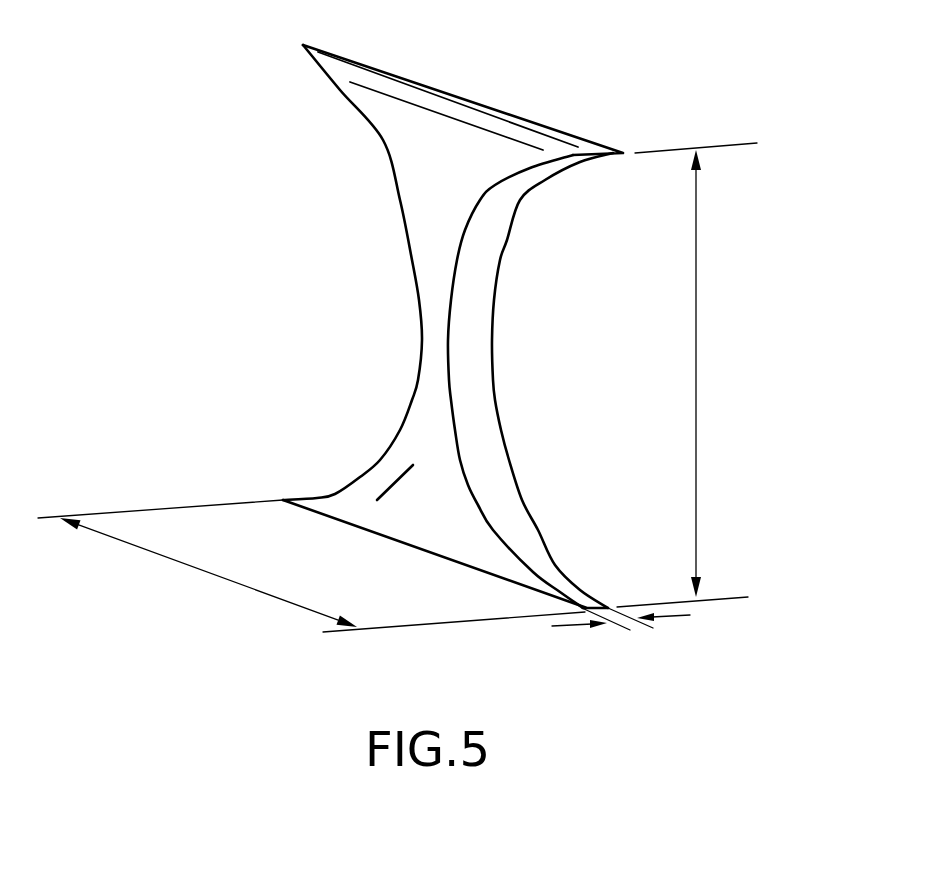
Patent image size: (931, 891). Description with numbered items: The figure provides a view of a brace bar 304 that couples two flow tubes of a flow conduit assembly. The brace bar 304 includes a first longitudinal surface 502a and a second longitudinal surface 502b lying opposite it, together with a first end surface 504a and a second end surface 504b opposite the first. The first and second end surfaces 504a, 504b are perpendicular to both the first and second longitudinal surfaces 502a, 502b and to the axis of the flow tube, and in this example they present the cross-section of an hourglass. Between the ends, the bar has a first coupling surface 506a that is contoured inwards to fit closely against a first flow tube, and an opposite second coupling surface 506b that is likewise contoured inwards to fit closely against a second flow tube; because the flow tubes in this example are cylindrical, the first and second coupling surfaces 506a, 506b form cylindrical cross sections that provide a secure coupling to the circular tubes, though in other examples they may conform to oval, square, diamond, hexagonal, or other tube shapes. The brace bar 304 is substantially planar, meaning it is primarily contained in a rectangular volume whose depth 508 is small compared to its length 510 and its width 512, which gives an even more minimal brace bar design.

The brace bar 304 is at (226, 82).
The first longitudinal surface 502a is at (542, 128).
The second longitudinal surface 502b is at (430, 553).
The first end surface 504a is at (377, 500).
The second end surface 504b is at (494, 318).
The first coupling surface 506a is at (368, 478).
The second coupling surface 506b is at (488, 462).
The depth 508 is at (577, 627).
The length 510 is at (696, 363).
The width 512 is at (173, 560).